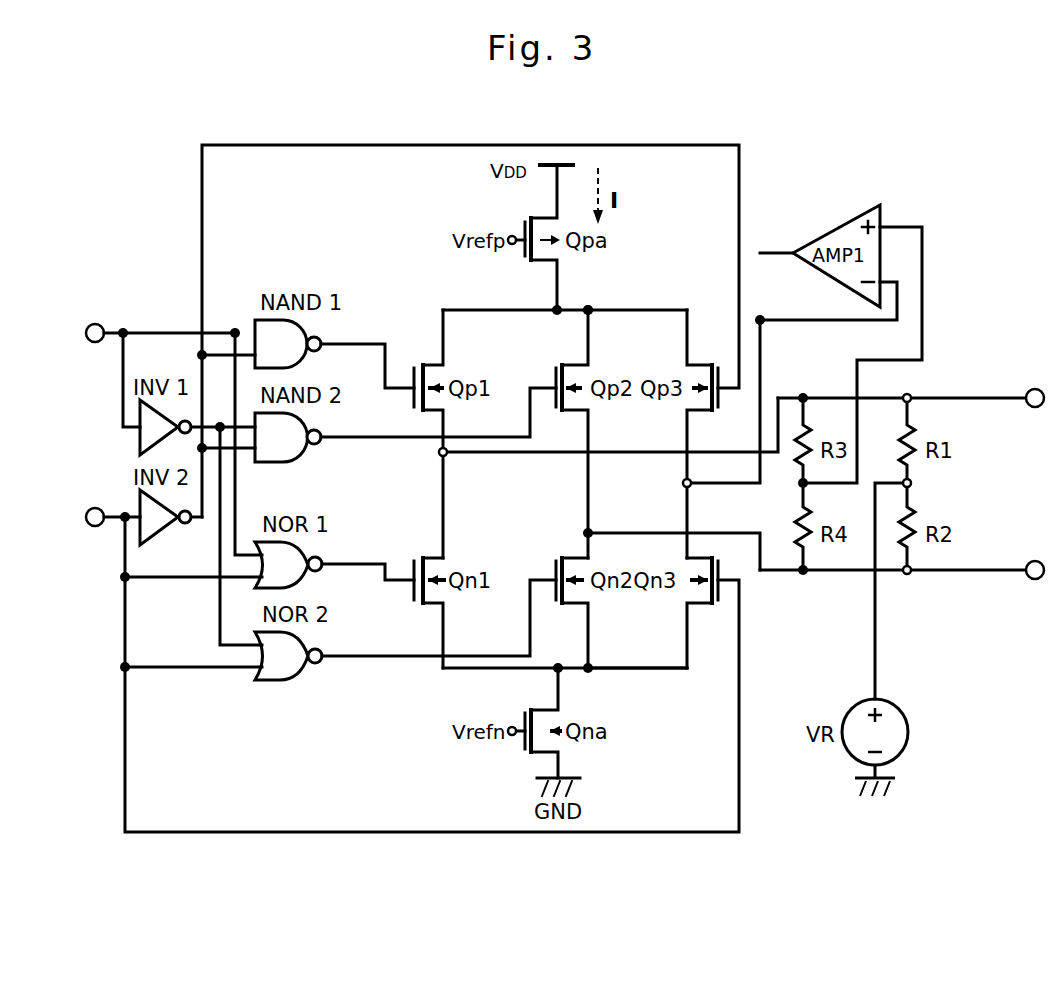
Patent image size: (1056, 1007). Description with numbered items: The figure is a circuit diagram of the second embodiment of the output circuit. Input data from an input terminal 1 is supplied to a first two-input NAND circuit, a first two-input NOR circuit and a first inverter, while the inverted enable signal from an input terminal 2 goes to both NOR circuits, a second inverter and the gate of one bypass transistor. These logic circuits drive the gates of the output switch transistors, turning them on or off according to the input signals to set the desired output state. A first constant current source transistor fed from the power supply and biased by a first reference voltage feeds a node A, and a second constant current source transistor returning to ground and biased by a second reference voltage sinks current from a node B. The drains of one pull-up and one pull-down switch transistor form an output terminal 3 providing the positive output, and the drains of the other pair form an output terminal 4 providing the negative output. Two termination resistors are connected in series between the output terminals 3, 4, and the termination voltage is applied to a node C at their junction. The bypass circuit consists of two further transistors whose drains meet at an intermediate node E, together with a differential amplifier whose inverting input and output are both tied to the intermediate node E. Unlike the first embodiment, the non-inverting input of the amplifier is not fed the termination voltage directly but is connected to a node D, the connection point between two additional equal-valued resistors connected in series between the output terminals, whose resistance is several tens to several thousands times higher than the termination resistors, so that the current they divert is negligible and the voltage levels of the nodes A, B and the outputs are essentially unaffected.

The input terminal 1 is at (96, 322).
The input terminal 2 is at (96, 530).
The output terminal 3 is at (1034, 386).
The output terminal 4 is at (1035, 582).
The node A is at (591, 300).
The node B is at (646, 688).
The node C is at (922, 483).
The node D is at (790, 486).
The intermediate node E is at (676, 483).